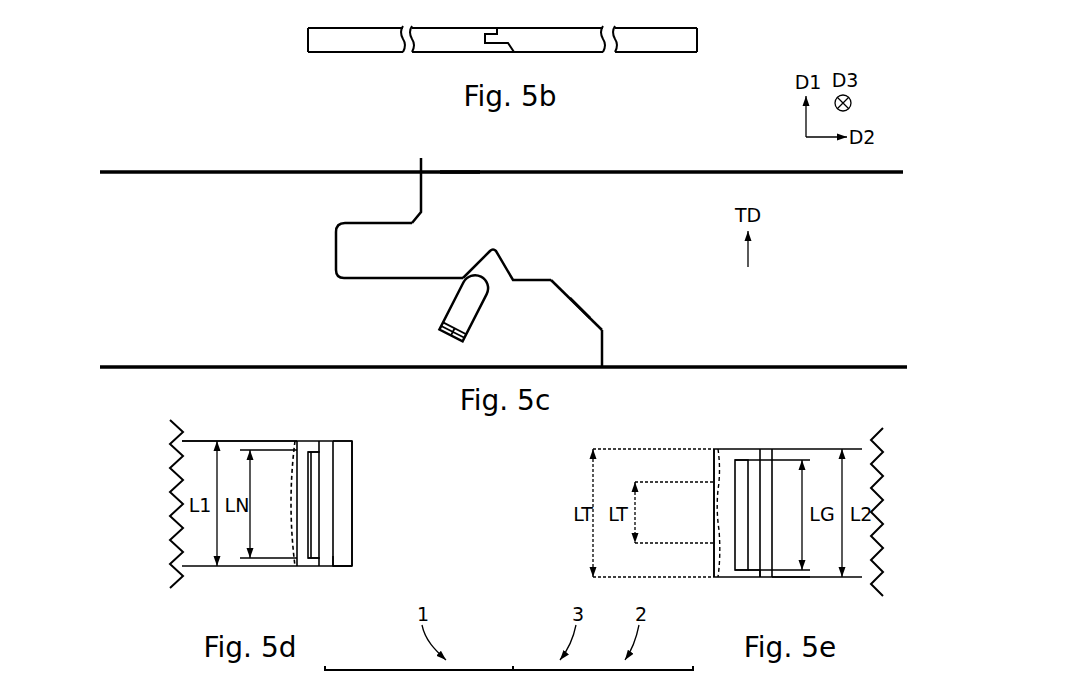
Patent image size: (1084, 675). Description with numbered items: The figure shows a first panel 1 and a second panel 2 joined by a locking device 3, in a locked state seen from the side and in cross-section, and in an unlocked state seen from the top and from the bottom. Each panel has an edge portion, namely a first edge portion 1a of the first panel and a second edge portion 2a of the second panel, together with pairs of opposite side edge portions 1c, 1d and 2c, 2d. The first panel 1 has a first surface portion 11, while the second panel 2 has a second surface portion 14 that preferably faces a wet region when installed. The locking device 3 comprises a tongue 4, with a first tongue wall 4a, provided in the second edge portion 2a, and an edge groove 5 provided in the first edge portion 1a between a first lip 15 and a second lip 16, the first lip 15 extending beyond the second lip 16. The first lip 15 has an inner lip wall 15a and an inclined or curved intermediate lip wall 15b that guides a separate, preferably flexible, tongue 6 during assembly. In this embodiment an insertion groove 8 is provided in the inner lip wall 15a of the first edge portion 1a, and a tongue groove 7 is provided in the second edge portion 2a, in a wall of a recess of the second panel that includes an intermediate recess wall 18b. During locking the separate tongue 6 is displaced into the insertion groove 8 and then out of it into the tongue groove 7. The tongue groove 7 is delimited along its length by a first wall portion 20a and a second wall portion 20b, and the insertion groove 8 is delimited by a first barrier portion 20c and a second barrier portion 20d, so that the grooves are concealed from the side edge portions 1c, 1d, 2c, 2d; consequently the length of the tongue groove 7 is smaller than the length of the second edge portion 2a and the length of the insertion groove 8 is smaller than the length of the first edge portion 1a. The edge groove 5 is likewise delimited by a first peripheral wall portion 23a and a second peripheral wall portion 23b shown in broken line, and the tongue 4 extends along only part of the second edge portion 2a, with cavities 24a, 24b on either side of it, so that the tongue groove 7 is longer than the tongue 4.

In FIG. 5B, the first panel 1 is at (372, 40).
In FIG. 5C, the first panel 1 is at (270, 153).
In FIG. 5D, the first panel 1 is at (176, 472).
In FIG. 5D, the first edge portion 1a is at (365, 507).
In FIG. 5D, the side edge portion 1c is at (248, 571).
In FIG. 5D, the side edge portion 1d is at (254, 438).
In FIG. 5B, the second panel 2 is at (660, 38).
In FIG. 5C, the second panel 2 is at (660, 152).
In FIG. 5E, the second panel 2 is at (882, 481).
In FIG. 5E, the second edge portion 2a is at (701, 523).
In FIG. 5E, the side edge portion 2c is at (825, 444).
In FIG. 5E, the side edge portion 2d is at (825, 585).
In FIG. 5C, the locking device 3 is at (463, 160).
In FIG. 5C, the tongue 4 is at (351, 237).
In FIG. 5E, the tongue 4 is at (712, 501).
In FIG. 5E, the first tongue wall 4a is at (724, 450).
In FIG. 5C, the edge groove 5 is at (369, 278).
In FIG. 5C, the separate tongue 6 is at (470, 288).
In FIG. 5C, the tongue groove 7 is at (500, 267).
In FIG. 5E, the tongue groove 7 is at (750, 505).
In FIG. 5D, the insertion groove 8 is at (307, 507).
In FIG. 5D, the first surface portion 11 is at (232, 440).
In FIG. 5E, the second surface portion 14 is at (792, 579).
In FIG. 5C, the first lip 15 is at (567, 311).
In FIG. 5D, the first lip 15 is at (354, 478).
In FIG. 5D, the inner lip wall 15a is at (336, 562).
In FIG. 5C, the intermediate lip wall 15b is at (586, 316).
In FIG. 5D, the intermediate lip wall 15b is at (354, 448).
In FIG. 5C, the second lip 16 is at (386, 183).
In FIG. 5C, the intermediate recess wall 18b is at (591, 330).
In FIG. 5E, the intermediate recess wall 18b is at (769, 462).
In FIG. 5B, the first wall portion 20a is at (500, 33).
In FIG. 5E, the first wall portion 20a is at (746, 448).
In FIG. 5E, the second wall portion 20b is at (746, 579).
In FIG. 5B, the first barrier portion 20c is at (487, 46).
In FIG. 5D, the first barrier portion 20c is at (319, 568).
In FIG. 5D, the second barrier portion 20d is at (321, 444).
In FIG. 5D, the first peripheral wall portion 23a is at (294, 571).
In FIG. 5D, the second peripheral wall portion 23b is at (295, 439).
In FIG. 5E, the cavity 24a is at (711, 466).
In FIG. 5E, the cavity 24b is at (711, 559).